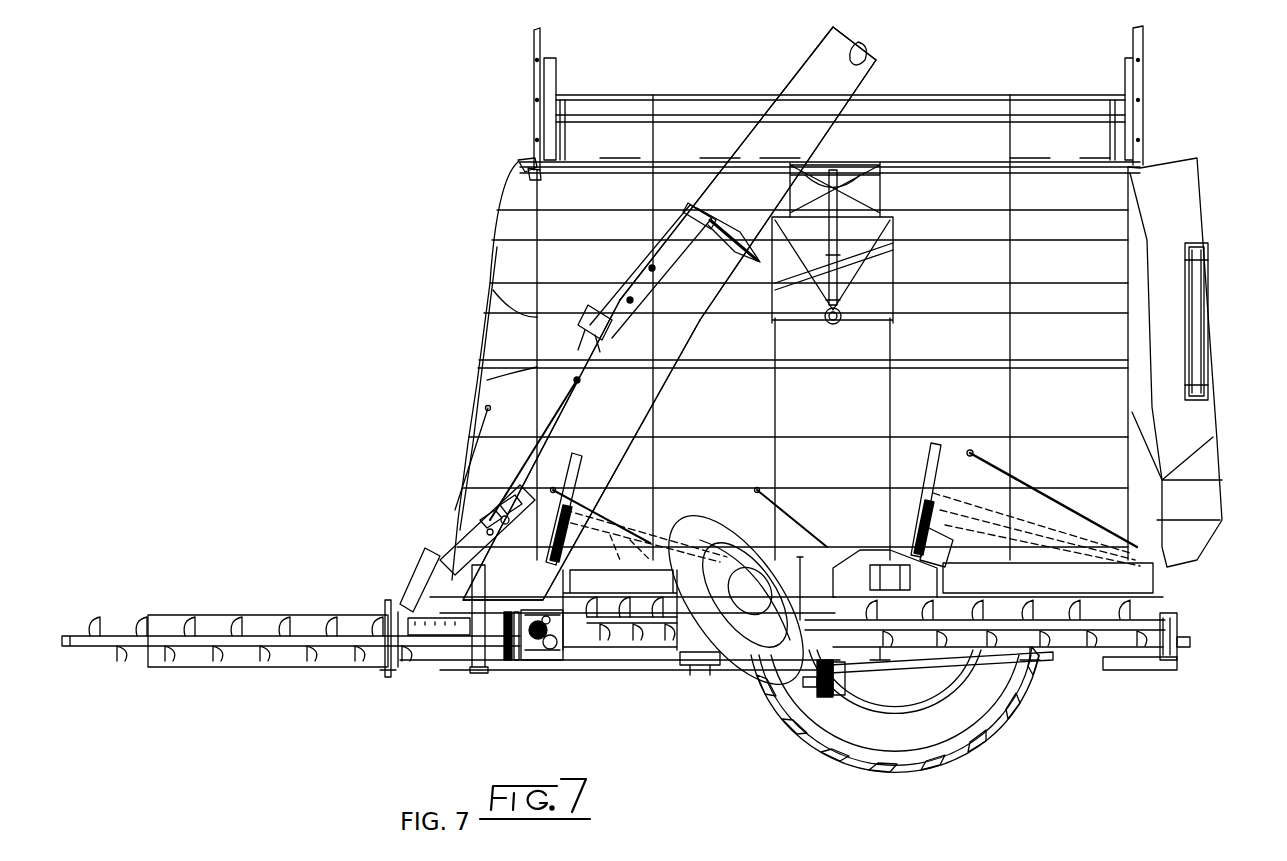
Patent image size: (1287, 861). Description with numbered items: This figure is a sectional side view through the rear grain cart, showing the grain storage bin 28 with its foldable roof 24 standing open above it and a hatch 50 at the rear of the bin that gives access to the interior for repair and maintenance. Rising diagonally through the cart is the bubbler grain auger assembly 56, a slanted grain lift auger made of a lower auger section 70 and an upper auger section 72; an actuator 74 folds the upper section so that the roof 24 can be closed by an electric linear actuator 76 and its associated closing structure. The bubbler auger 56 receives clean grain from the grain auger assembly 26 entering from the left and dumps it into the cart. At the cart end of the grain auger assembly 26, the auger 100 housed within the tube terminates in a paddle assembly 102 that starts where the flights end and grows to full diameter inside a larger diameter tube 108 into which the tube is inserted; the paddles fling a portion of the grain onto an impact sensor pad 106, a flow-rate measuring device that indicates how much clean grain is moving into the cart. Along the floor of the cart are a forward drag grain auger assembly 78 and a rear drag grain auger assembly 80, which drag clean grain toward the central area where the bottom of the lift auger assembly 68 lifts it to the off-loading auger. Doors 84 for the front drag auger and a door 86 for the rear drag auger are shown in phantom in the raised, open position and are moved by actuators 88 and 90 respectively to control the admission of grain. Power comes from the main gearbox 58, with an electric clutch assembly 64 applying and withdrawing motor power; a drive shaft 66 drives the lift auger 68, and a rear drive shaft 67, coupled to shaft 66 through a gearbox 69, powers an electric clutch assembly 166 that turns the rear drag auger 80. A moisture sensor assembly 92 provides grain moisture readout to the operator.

The foldable roof 24 is at (950, 100).
The grain auger assembly 26 is at (297, 610).
The grain storage bin 28 is at (1175, 205).
The hatch 50 is at (1198, 288).
The bubbler grain auger assembly 56 is at (702, 332).
The main gearbox 58 is at (533, 663).
The electric clutch assembly 64 is at (510, 665).
The drive shaft 66 is at (687, 667).
The rear drive shaft 67 is at (983, 653).
The lift auger assembly 68 is at (737, 557).
The gearbox 69 is at (773, 712).
The lower auger section 70 is at (627, 402).
The upper auger section 72 is at (810, 85).
The actuator 74 is at (650, 275).
The electric linear actuator 76 is at (860, 270).
The forward drag grain auger assembly 78 is at (630, 663).
The rear drag grain auger assembly 80 is at (1080, 650).
The doors 84 is at (597, 547).
The door 86 is at (990, 555).
The actuator 88 is at (580, 468).
The actuator 90 is at (940, 445).
The moisture sensor assembly 92 is at (482, 508).
The auger 100 is at (218, 610).
The paddle assembly 102 is at (432, 636).
The impact sensor pad 106 is at (418, 570).
The larger diameter tube 108 is at (403, 677).
The electric clutch assembly 166 is at (1190, 633).